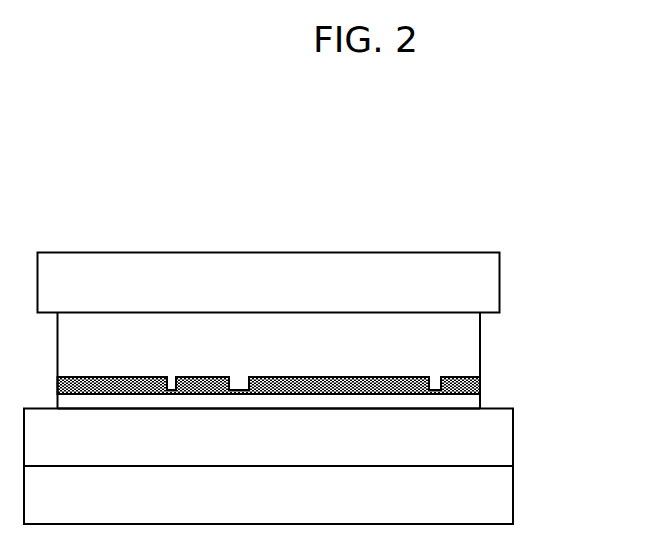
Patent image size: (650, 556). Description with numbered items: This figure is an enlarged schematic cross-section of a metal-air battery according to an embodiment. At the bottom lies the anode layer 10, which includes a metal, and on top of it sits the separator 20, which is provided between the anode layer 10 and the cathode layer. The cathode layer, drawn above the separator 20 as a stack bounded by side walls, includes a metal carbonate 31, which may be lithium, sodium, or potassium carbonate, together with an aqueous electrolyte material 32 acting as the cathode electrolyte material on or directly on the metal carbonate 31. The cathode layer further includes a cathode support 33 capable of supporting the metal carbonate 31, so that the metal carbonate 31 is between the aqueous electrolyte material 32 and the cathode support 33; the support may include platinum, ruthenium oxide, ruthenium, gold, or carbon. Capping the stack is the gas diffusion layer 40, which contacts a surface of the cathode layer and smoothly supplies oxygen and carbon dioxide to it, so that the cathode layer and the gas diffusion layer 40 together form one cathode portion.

The anode layer 10 is at (514, 496).
The separator 20 is at (514, 438).
The metal carbonate 31 is at (481, 387).
The aqueous electrolyte material 32 is at (481, 345).
The cathode support 33 is at (481, 403).
The gas diffusion layer 40 is at (501, 283).